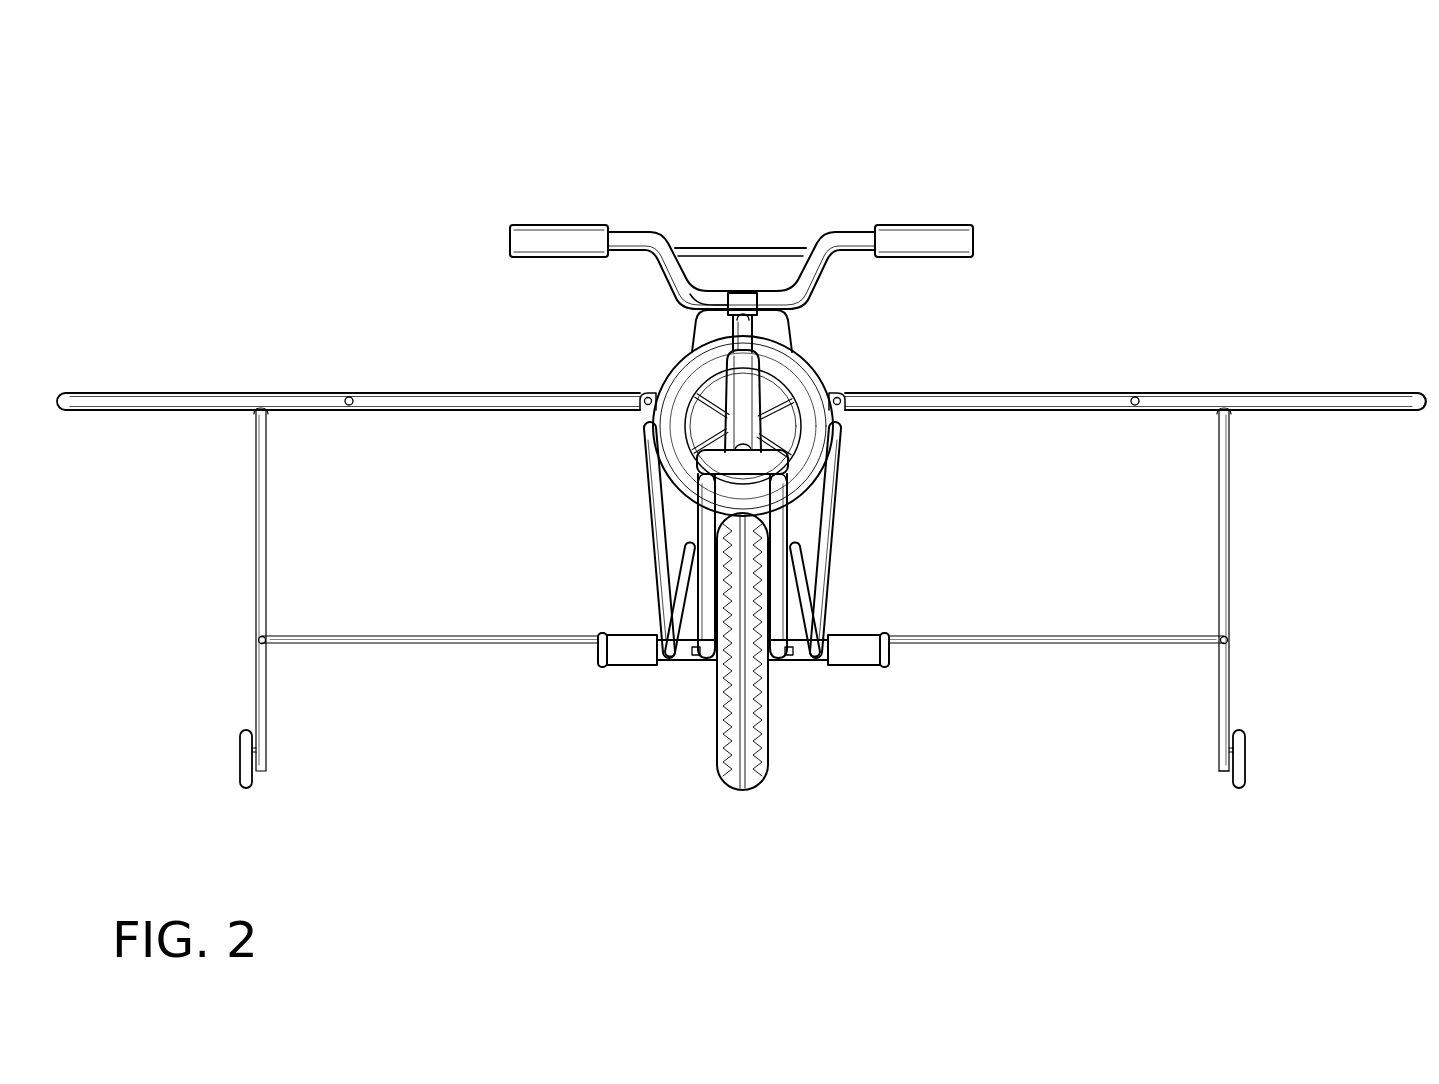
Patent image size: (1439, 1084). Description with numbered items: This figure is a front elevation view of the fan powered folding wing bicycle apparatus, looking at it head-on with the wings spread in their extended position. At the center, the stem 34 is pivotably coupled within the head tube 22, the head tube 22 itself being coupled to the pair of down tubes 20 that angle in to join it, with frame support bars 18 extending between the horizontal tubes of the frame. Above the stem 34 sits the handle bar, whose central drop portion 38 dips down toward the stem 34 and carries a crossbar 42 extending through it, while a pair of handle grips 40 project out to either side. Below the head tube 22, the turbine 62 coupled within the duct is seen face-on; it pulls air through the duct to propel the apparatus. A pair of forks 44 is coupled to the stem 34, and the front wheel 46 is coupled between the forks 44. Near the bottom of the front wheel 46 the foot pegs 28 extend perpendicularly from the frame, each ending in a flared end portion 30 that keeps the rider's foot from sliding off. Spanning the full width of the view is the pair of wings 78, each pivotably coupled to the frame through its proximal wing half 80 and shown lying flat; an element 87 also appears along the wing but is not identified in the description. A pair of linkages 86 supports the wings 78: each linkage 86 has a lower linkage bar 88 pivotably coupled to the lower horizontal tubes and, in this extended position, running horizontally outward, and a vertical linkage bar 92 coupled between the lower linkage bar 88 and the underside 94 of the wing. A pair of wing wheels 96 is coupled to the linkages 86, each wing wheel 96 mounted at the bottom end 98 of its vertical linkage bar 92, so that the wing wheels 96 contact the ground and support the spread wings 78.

The frame support bars 18 is at (658, 520).
The down tubes 20 is at (675, 623).
The head tube 22 is at (740, 392).
The foot peg 28 is at (852, 654).
The flared end portion 30 is at (600, 650).
The stem 34 is at (743, 333).
The central drop portion 38 is at (703, 298).
The handle grips 40 is at (930, 233).
The crossbar 42 is at (763, 250).
The forks 44 is at (698, 565).
The front wheel 46 is at (752, 758).
The turbine 62 is at (707, 403).
The wings 78 is at (425, 393).
The proximal wing half 80 is at (1018, 393).
The linkages 86 is at (260, 582).
The support bar mounting section 87 is at (1180, 393).
The lower linkage bar 88 is at (1094, 641).
The vertical linkage bar 92 is at (1221, 562).
The underside of the wing 94 is at (1267, 409).
The wing wheels 96 is at (1248, 757).
The bottom end of the vertical linkage bar 98 is at (1224, 771).